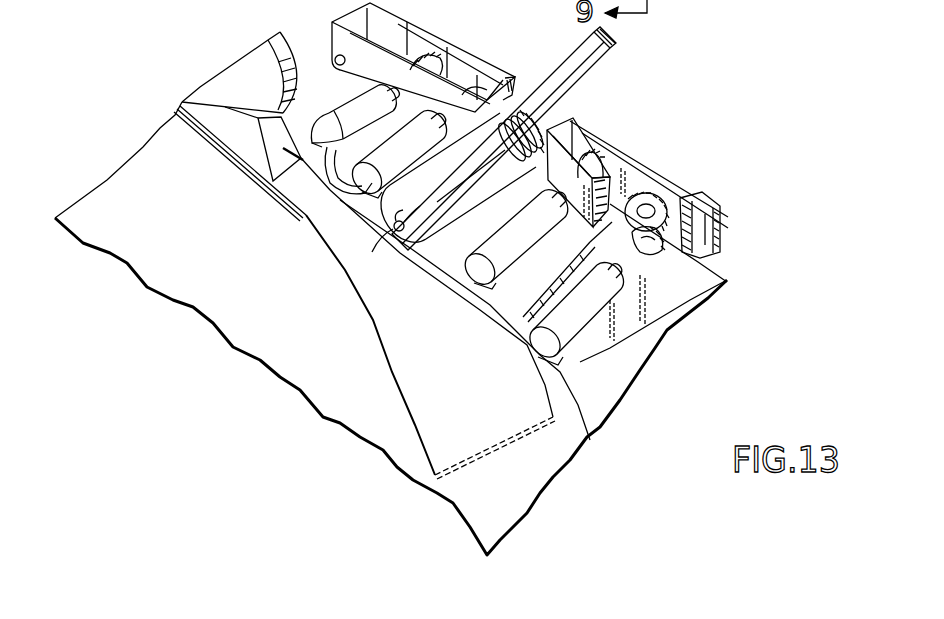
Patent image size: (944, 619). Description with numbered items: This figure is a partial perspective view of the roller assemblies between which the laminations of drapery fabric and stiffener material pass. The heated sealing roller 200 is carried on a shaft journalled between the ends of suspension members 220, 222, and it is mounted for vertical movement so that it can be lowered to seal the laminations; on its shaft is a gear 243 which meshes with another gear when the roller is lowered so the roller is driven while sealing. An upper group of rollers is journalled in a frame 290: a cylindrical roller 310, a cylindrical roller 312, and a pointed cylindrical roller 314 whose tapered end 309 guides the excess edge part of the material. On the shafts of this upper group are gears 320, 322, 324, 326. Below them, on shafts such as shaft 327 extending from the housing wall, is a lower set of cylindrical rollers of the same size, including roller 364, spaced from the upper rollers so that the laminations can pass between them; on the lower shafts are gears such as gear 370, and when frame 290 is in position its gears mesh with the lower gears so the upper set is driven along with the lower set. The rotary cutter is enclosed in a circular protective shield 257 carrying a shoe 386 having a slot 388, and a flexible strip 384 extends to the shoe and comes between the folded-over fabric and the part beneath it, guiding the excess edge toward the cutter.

The heated sealing roller 200 is at (494, 195).
The suspension member 220 is at (585, 81).
The suspension member 222 is at (382, 243).
The gear 243 is at (564, 182).
The circular protective housing or shield 257 is at (227, 77).
The frame 290 is at (432, 30).
The tapered end 309 is at (323, 128).
The cylindrical roller 310 is at (530, 251).
The cylindrical roller 312 is at (411, 167).
The pointed cylindrical roller 314 is at (376, 116).
The gear 320 is at (650, 200).
The gear 322 is at (597, 157).
The gear 324 is at (490, 80).
The gear 326 is at (433, 52).
The shaft 327 is at (592, 260).
The cylindrical roller 364 is at (592, 320).
The gear 370 is at (667, 247).
The flexible strip of material 384 is at (469, 390).
The shoe 386 is at (262, 150).
The slot 388 is at (297, 157).